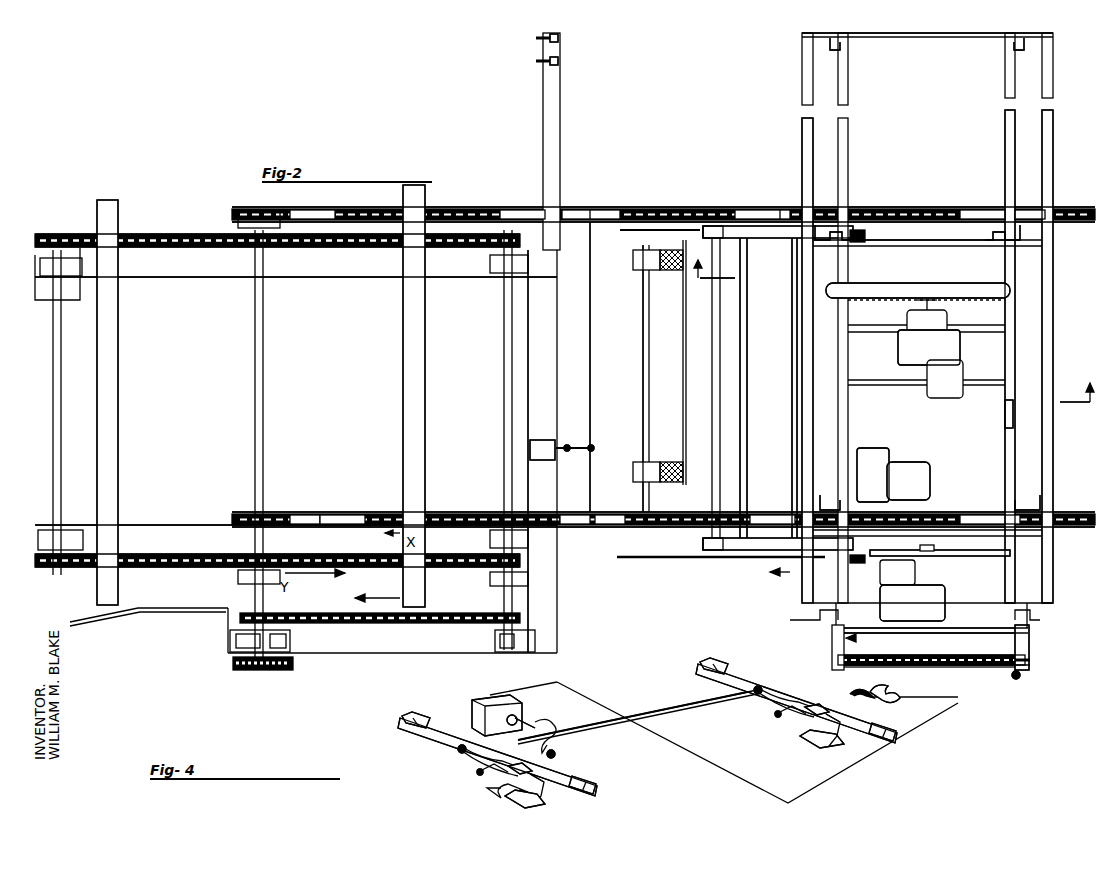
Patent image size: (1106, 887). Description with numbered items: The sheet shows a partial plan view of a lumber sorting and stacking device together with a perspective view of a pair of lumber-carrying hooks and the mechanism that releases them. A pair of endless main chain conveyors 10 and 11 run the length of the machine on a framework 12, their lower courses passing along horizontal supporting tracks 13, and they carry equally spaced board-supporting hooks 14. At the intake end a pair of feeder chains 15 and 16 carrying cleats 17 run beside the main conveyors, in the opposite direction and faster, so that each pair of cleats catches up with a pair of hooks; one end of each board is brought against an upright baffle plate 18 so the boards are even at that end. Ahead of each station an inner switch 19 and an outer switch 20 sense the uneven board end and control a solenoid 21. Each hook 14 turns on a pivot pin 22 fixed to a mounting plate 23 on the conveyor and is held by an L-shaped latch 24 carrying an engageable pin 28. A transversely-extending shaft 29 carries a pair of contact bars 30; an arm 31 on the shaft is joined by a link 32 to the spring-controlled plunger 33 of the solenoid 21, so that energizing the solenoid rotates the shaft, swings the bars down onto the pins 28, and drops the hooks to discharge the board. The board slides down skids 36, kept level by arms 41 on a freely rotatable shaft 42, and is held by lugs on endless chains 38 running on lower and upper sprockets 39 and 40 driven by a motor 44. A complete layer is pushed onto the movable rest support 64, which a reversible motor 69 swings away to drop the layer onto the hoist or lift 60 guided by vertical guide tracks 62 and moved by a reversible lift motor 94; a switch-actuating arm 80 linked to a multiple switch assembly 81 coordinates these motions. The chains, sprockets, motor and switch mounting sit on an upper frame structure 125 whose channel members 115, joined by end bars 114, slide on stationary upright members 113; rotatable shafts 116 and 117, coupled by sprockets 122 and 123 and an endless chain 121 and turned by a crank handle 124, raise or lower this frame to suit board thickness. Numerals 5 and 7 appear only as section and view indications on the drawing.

In FIG. 2, the section line 5 is at (892, 325).
In FIG. 2, the lever 7 is at (866, 645).
In FIG. 2, the main chain conveyor 10 is at (445, 512).
In FIG. 4, the main chain conveyor 10 is at (418, 722).
In FIG. 2, the main chain conveyor 11 is at (485, 208).
In FIG. 4, the main chain conveyor 11 is at (712, 666).
In FIG. 2, the framework 12 is at (35, 270).
In FIG. 2, the horizontal supporting tracks 13 is at (636, 208).
In FIG. 4, the horizontal supporting tracks 13 is at (425, 736).
In FIG. 2, the board-supporting hooks 14 is at (522, 209).
In FIG. 4, the board-supporting hooks 14 is at (540, 796).
In FIG. 2, the feeder chain 15 is at (155, 552).
In FIG. 2, the feeder chain 16 is at (165, 234).
In FIG. 2, the cleats 17 is at (94, 235).
In FIG. 2, the upright baffle plate 18 is at (148, 610).
In FIG. 2, the inner switch 19 is at (558, 61).
In FIG. 4, the inner switch 19 is at (860, 697).
In FIG. 2, the outer switch 20 is at (558, 38).
In FIG. 4, the outer switch 20 is at (892, 692).
In FIG. 2, the solenoid 21 is at (550, 445).
In FIG. 4, the solenoid 21 is at (478, 708).
In FIG. 4, the pivot pin 22 is at (560, 775).
In FIG. 2, the mounting plate 23 is at (572, 207).
In FIG. 4, the L-shaped latch 24 is at (518, 768).
In FIG. 4, the engageable pin 28 is at (480, 772).
In FIG. 2, the transversely-extending shaft 29 is at (592, 332).
In FIG. 4, the transversely-extending shaft 29 is at (662, 708).
In FIG. 2, the contact bars 30 is at (598, 228).
In FIG. 4, the contact bars 30 is at (470, 758).
In FIG. 2, the arm 31 is at (593, 448).
In FIG. 4, the arm 31 is at (557, 740).
In FIG. 2, the link 32 is at (585, 445).
In FIG. 4, the link 32 is at (530, 728).
In FIG. 2, the spring-controlled plunger 33 is at (556, 452).
In FIG. 4, the spring-controlled plunger 33 is at (513, 716).
In FIG. 2, the skids 36 is at (632, 246).
In FIG. 2, the endless chains 38 is at (757, 238).
In FIG. 2, the lower sprockets 39 is at (858, 240).
In FIG. 2, the upper sprockets 40 is at (712, 213).
In FIG. 2, the arms 41 is at (790, 250).
In FIG. 2, the freely rotatable shaft 42 is at (746, 328).
In FIG. 2, the motor 44 is at (952, 345).
In FIG. 2, the hoist or lift 60 is at (1042, 247).
In FIG. 2, the vertical guide tracks 62 is at (825, 243).
In FIG. 2, the movable rest support 64 is at (940, 283).
In FIG. 2, the reversible motor 69 is at (930, 472).
In FIG. 2, the switch-actuating arm 80 is at (975, 557).
In FIG. 2, the multiple switch assembly 81 is at (932, 556).
In FIG. 2, the reversible lift motor 94 is at (912, 604).
In FIG. 2, the stationary upright members 113 is at (840, 42).
In FIG. 2, the end bars 114 is at (925, 37).
In FIG. 2, the channel members 115 is at (812, 370).
In FIG. 2, the rotatable shaft 116 is at (931, 643).
In FIG. 2, the rotatable shaft 117 is at (1005, 413).
In FIG. 2, the endless chain 121 is at (960, 666).
In FIG. 2, the sprocket 122 is at (835, 662).
In FIG. 2, the sprocket 123 is at (1030, 660).
In FIG. 2, the crank handle 124 is at (1022, 676).
In FIG. 2, the upper frame structure 125 is at (914, 238).